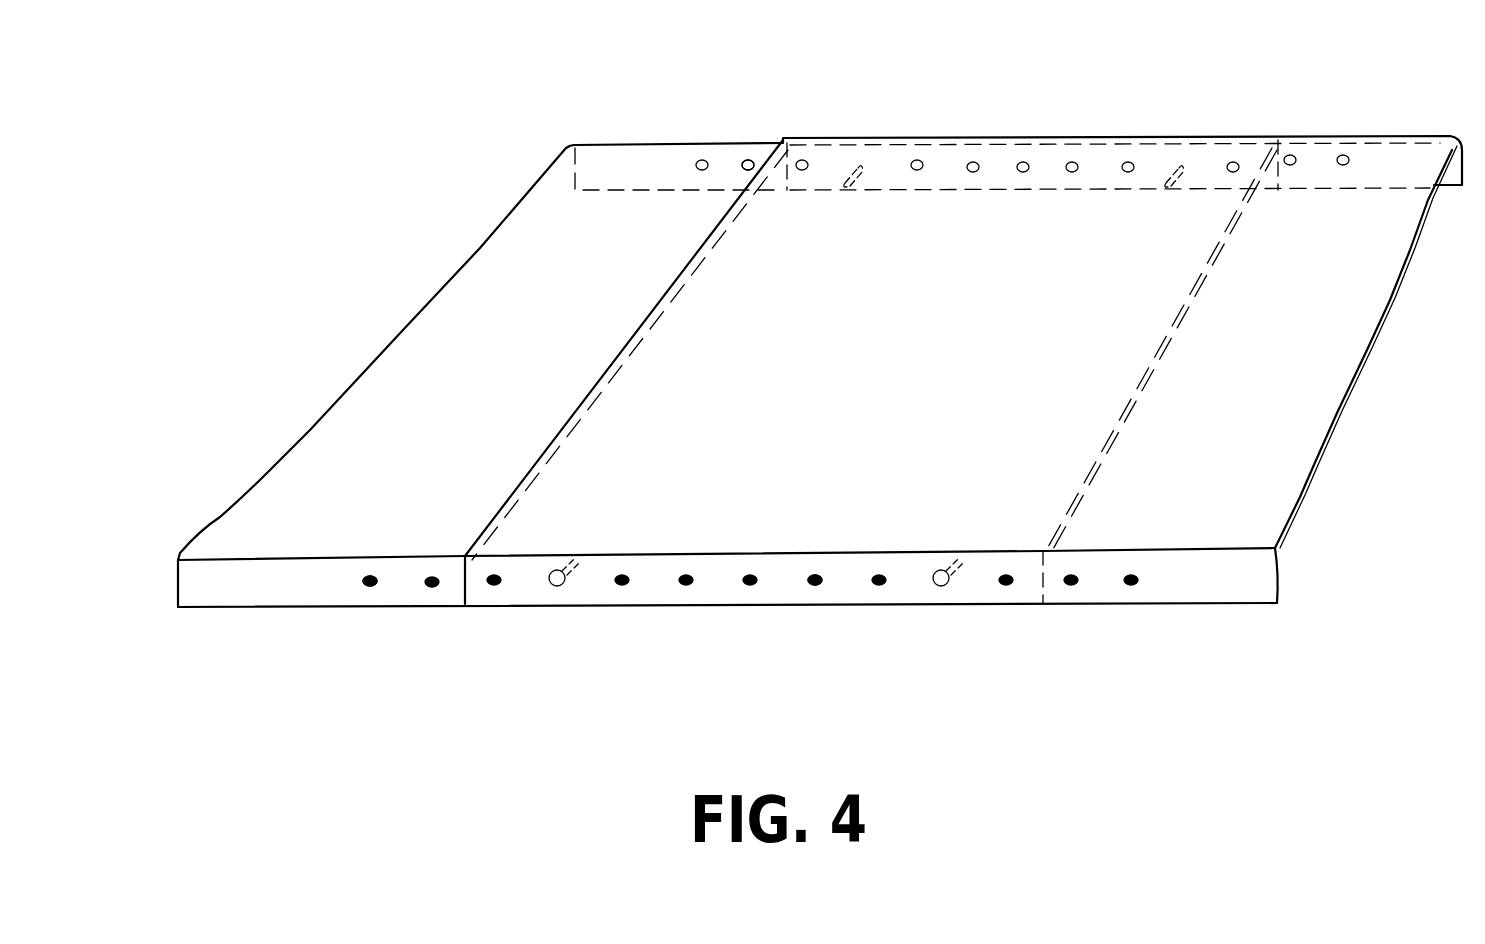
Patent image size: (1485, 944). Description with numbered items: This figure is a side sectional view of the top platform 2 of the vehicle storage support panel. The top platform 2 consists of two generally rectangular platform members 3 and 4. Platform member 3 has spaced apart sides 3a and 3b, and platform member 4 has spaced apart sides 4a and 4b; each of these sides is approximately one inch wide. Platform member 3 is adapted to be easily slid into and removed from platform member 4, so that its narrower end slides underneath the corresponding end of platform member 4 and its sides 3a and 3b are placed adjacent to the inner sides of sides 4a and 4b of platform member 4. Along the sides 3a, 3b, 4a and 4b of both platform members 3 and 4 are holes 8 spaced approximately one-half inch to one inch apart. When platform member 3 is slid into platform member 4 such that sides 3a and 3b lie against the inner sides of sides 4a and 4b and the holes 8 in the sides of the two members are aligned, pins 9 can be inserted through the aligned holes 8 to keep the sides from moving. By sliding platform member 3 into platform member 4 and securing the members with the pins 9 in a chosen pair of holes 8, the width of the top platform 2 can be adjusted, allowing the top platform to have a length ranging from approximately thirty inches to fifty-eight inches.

The top platform 2 is at (588, 608).
The platform member 3 is at (640, 143).
The side of platform member 3 3a is at (232, 600).
The side of platform member 3 3b is at (728, 172).
The platform member 4 is at (1035, 140).
The side of platform member 4 4a is at (790, 595).
The side of platform member 4 4b is at (1150, 178).
The holes 8 is at (372, 588).
The pins 9 is at (949, 590).